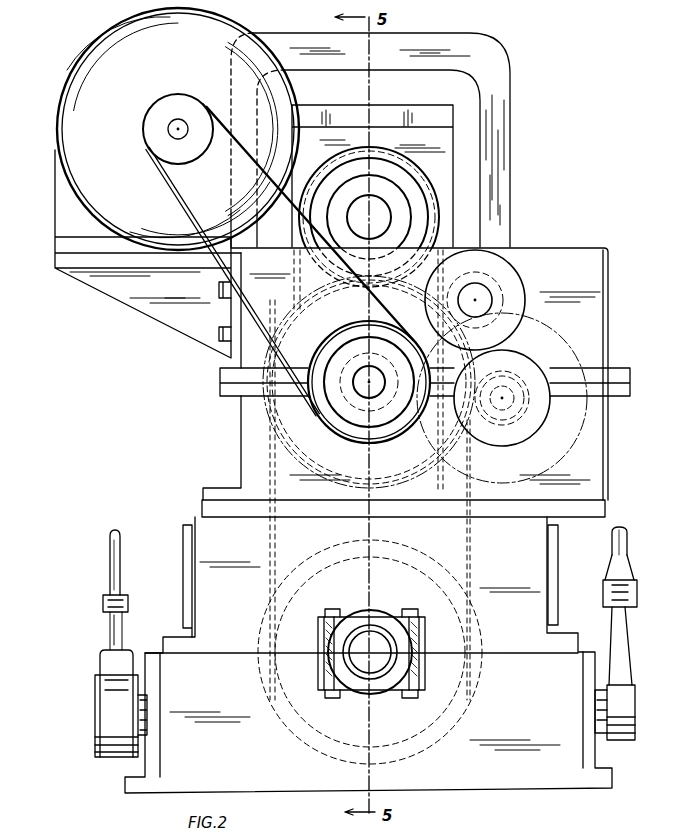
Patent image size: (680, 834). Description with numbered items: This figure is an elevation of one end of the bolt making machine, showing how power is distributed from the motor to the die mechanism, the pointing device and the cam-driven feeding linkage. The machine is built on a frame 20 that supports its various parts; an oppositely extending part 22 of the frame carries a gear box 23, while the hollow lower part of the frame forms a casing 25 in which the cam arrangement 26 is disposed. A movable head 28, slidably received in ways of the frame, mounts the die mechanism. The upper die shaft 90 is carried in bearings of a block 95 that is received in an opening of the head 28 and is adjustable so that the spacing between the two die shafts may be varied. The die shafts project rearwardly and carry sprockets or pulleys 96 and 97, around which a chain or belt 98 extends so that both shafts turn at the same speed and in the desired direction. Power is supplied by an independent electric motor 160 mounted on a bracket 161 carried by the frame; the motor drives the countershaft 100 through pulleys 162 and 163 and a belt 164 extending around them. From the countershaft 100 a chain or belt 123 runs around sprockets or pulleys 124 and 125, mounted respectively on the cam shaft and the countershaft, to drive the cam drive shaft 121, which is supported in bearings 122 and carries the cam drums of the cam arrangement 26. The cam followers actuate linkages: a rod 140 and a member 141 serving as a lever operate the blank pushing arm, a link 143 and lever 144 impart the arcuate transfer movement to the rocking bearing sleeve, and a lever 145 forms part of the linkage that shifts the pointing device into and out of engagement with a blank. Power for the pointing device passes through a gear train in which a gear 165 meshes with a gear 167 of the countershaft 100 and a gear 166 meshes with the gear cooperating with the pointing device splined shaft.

The frame 20 is at (178, 643).
The oppositely extending part of the frame 22 is at (605, 505).
The gear box 23 is at (598, 283).
The casing 25 is at (215, 662).
The cam arrangement 26 is at (482, 630).
The movable head 28 is at (520, 67).
The shaft 90 is at (358, 200).
The block 95 is at (445, 135).
The sprocket or pulley 96 is at (358, 328).
The sprocket or pulley 97 is at (395, 157).
The chain or belt 98 is at (380, 152).
The countershaft 100 is at (365, 372).
The drive shaft 121 is at (378, 642).
The bearings 122 is at (352, 625).
The chain or belt 123 is at (470, 558).
The sprocket or pulley 124 is at (465, 672).
The sprocket or pulley 125 is at (296, 318).
The rod 140 is at (108, 575).
The member 141 is at (108, 660).
The link 143 is at (628, 540).
The lever 144 is at (622, 660).
The lever 145 is at (505, 290).
The electric motor 160 is at (80, 143).
The bracket 161 is at (108, 296).
The pulley 162 is at (160, 142).
The pulley 163 is at (345, 417).
The belt 164 is at (163, 173).
The gear 165 is at (500, 425).
The gear 166 is at (580, 435).
The gear of the countershaft 167 is at (405, 482).